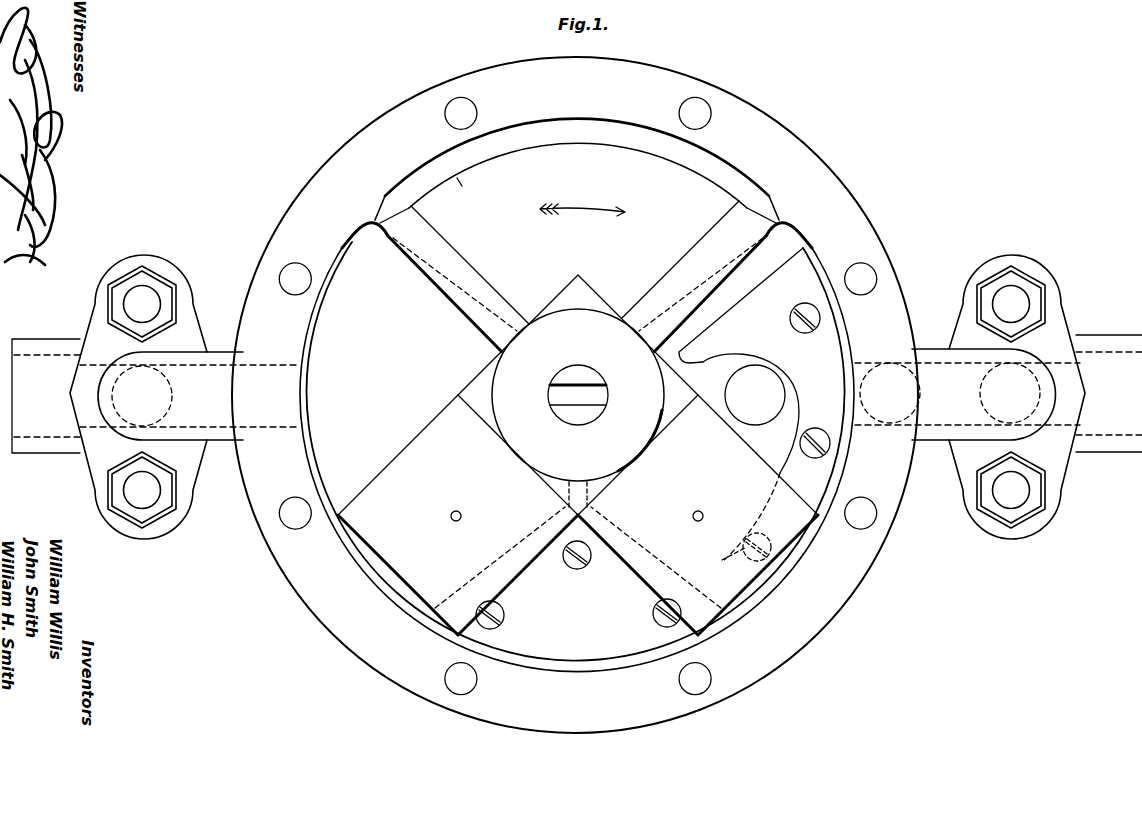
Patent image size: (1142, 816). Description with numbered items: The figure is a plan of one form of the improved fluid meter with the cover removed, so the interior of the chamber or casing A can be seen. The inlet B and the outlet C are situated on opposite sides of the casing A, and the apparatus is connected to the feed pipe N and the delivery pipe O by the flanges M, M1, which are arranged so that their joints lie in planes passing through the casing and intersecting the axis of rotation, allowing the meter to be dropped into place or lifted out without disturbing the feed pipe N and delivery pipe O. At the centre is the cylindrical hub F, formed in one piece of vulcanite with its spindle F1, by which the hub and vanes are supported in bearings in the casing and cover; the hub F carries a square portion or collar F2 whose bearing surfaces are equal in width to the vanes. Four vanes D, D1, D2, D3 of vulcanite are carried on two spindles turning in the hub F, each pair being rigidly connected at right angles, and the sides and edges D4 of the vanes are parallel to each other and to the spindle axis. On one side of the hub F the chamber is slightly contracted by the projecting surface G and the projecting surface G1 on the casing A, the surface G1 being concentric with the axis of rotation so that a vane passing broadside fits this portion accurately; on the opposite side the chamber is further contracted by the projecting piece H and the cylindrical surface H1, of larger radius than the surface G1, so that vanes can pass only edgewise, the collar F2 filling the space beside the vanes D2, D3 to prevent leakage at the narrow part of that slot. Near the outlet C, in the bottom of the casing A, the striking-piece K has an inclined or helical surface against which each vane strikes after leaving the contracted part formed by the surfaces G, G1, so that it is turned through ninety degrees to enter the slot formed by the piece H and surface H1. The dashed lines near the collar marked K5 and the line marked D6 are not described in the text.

The chamber or casing A is at (575, 395).
The inlet B is at (190, 396).
The outlet C is at (967, 394).
The vane D is at (458, 279).
The vane D1 is at (694, 276).
The vane D2 is at (698, 515).
The vane D3 is at (458, 515).
The edges of the vanes D4 is at (745, 441).
The dashed guide line D6 is at (622, 562).
The central piece or hub F is at (578, 395).
The spindle of the hub F1 is at (598, 377).
The square portion or collar F2 is at (578, 395).
The projecting surface G is at (578, 212).
The projecting surface G1 is at (712, 198).
The projecting piece H is at (623, 587).
The projecting surface H1 is at (505, 662).
The projection or striking-piece K is at (754, 405).
The slot K5 is at (559, 498).
The flange M is at (138, 397).
The flange M1 is at (1017, 397).
The feed pipe N is at (46, 396).
The delivery pipe O is at (1109, 393).